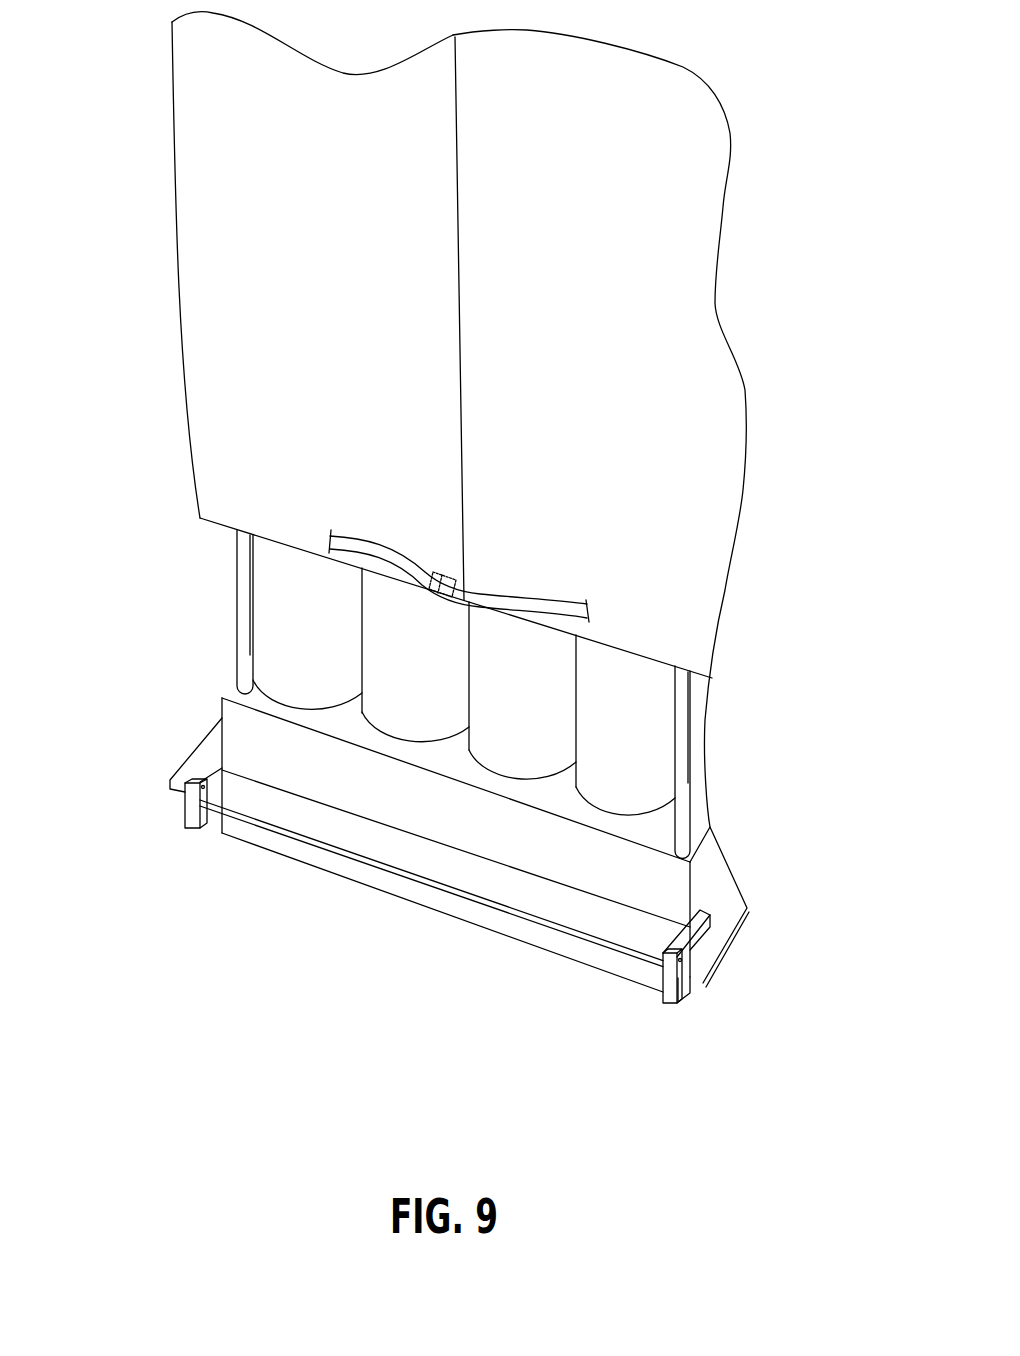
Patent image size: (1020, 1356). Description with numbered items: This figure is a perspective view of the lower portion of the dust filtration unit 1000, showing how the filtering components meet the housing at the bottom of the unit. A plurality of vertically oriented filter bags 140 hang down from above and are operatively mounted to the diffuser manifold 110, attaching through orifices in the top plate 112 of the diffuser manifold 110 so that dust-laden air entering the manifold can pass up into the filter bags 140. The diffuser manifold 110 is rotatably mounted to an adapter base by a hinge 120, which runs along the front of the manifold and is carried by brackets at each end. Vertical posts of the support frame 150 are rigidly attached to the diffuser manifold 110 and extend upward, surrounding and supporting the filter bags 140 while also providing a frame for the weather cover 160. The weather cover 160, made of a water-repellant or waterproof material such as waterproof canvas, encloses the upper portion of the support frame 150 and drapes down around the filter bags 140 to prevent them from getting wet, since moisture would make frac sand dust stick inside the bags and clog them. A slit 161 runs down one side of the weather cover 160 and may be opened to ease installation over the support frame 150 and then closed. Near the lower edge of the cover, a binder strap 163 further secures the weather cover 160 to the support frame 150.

The dust filtration unit 1000 is at (782, 498).
The weather cover 160 is at (628, 226).
The slit 161 is at (455, 340).
The support frame 150 is at (243, 615).
The binder strap 163 is at (475, 598).
The filter bags 140 is at (622, 793).
The diffuser manifold 110 is at (728, 868).
The top plate 112 is at (716, 827).
The hinge 120 is at (672, 1017).